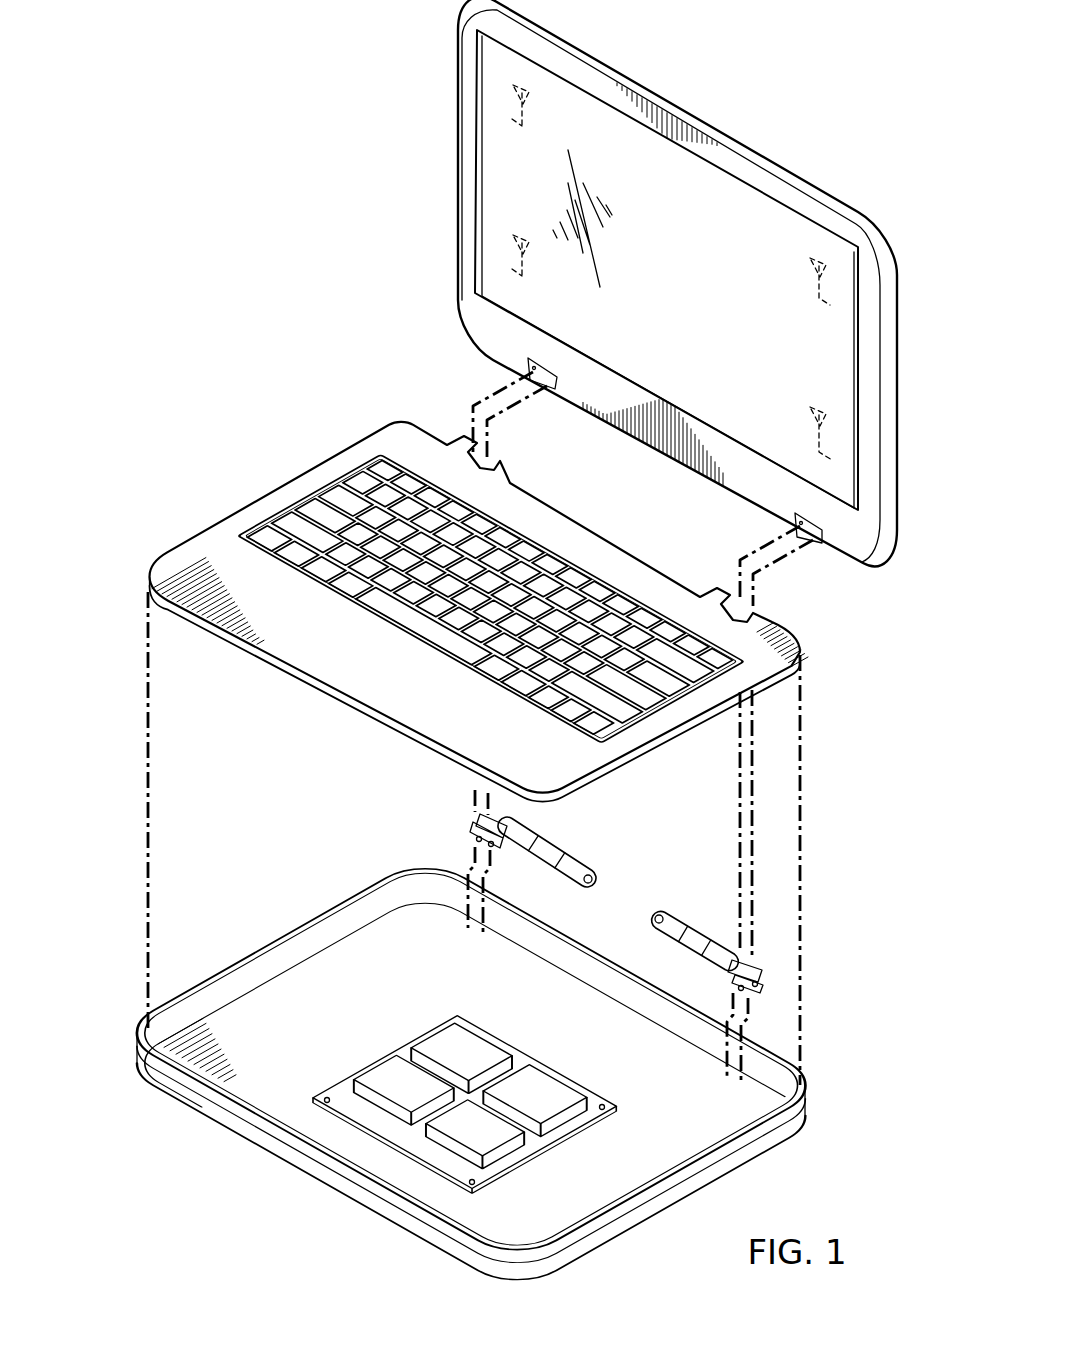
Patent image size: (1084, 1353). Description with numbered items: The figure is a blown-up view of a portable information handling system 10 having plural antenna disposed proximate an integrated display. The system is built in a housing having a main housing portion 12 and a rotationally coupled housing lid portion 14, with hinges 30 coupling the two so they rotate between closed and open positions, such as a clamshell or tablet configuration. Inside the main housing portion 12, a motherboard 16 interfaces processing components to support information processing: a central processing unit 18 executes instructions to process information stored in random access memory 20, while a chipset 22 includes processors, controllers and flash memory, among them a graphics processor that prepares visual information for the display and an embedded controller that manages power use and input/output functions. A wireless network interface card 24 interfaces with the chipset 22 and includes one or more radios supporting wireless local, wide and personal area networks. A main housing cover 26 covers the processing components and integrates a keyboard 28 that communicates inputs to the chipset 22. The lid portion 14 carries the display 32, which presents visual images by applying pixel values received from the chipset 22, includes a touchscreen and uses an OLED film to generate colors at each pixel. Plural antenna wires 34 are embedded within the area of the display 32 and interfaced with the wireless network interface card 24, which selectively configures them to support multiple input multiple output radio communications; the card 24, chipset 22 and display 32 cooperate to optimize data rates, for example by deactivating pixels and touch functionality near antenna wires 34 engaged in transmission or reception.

The portable information handling system 10 is at (171, 163).
The main housing portion 12 is at (253, 943).
The housing lid portion 14 is at (689, 113).
The motherboard 16 is at (394, 1129).
The central processing unit (CPU) 18 is at (437, 1030).
The random access memory (RAM) 20 is at (383, 1068).
The chipset 22 is at (558, 1098).
The wireless network interface card (WNIC) 24 is at (497, 1133).
The main housing cover 26 is at (363, 443).
The keyboard 28 is at (293, 500).
The hinges 30 is at (689, 905).
The display 32 is at (677, 302).
The antenna wires 34 is at (812, 416).